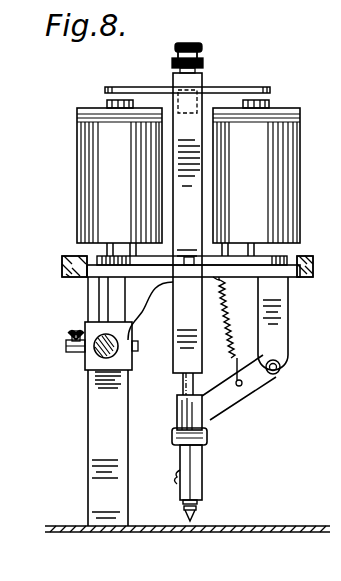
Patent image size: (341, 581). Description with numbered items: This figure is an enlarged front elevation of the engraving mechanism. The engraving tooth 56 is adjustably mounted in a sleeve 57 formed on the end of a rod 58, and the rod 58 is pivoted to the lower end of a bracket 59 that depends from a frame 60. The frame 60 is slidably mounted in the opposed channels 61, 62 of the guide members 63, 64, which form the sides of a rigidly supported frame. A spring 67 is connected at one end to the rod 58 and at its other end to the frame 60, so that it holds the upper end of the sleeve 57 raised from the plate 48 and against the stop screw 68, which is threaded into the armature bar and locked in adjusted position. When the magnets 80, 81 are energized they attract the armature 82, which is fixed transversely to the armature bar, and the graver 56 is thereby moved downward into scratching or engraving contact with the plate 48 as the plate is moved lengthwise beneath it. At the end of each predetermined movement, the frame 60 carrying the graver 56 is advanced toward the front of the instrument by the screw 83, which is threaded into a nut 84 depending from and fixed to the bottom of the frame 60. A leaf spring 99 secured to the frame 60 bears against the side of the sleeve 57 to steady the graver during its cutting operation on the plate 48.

The plate 48 is at (187, 516).
The engraving tooth 56 is at (198, 515).
The sleeve 57 is at (202, 459).
The rod 58 is at (232, 396).
The bracket 59 is at (280, 308).
The frame 60 is at (233, 290).
The channel 61 is at (63, 269).
The channel 62 is at (313, 269).
The guide member 63 is at (68, 256).
The guide member 64 is at (300, 256).
The spring 67 is at (229, 325).
The stop screw 68 is at (180, 391).
The magnet 80 is at (77, 158).
The magnet 81 is at (300, 160).
The armature 82 is at (146, 87).
The screw 83 is at (99, 359).
The nut 84 is at (91, 329).
The leaf spring 99 is at (170, 321).